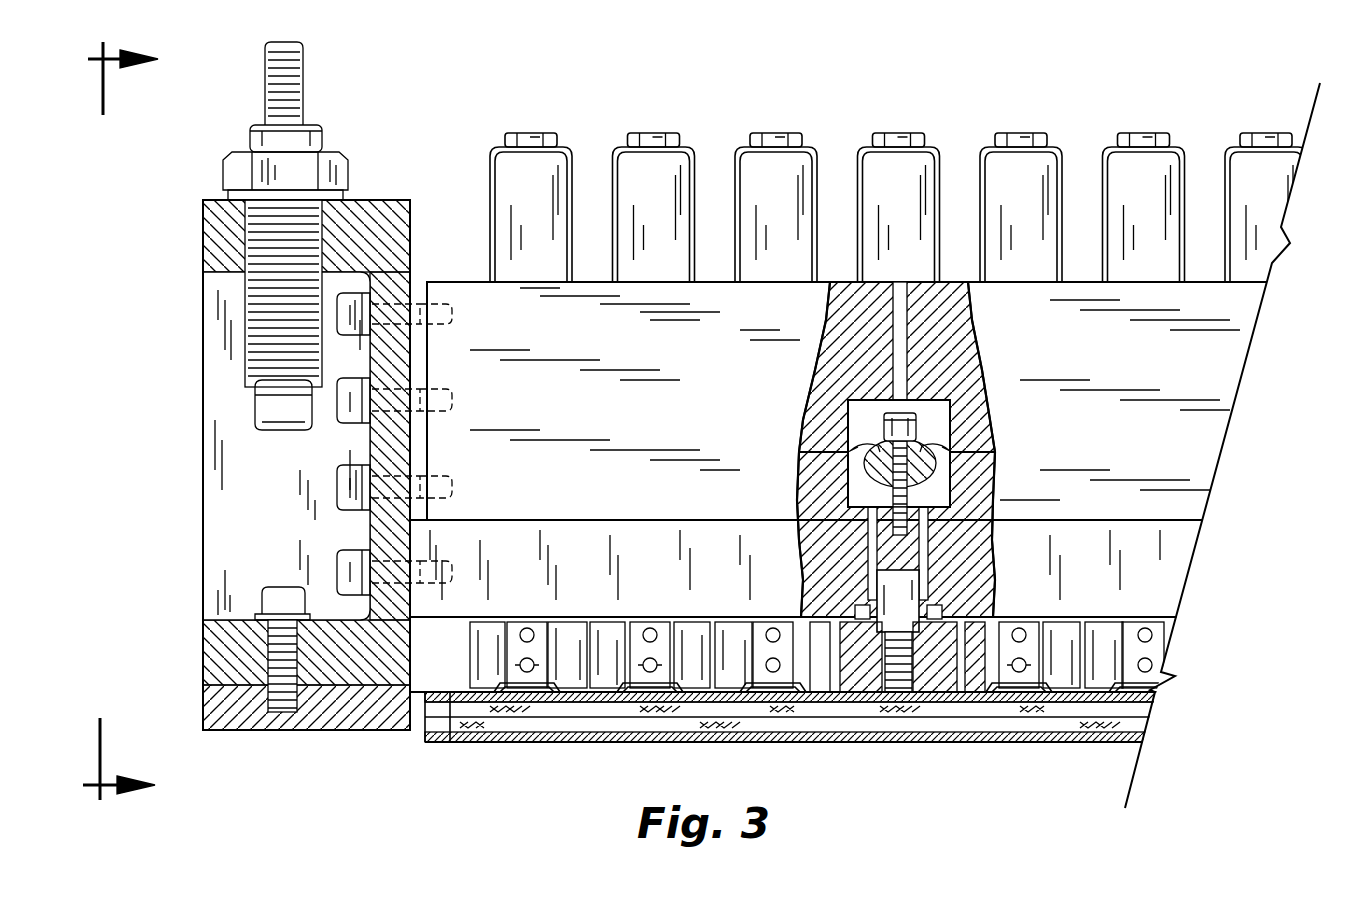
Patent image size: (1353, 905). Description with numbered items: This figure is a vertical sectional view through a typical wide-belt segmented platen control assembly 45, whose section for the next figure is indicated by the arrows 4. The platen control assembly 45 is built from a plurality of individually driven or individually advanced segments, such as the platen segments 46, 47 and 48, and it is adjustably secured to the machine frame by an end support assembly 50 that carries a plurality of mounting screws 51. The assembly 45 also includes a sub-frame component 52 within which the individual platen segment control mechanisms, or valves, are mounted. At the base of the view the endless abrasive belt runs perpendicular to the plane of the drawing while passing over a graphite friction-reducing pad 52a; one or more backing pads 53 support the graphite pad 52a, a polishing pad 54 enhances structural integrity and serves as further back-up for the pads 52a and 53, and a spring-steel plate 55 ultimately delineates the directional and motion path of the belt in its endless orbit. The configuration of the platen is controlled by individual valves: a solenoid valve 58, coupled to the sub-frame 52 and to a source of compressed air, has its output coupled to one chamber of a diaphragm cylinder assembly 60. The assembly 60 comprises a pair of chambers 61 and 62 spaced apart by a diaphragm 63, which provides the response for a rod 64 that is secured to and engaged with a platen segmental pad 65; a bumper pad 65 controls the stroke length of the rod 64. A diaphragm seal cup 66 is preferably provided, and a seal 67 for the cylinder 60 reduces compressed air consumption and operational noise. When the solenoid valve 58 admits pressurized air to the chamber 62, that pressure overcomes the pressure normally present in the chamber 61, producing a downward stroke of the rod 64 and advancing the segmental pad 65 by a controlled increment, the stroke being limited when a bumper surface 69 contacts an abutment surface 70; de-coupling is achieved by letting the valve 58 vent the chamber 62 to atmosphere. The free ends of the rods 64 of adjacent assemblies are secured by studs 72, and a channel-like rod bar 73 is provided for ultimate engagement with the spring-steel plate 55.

The section line 4- 4 is at (100, 422).
The platen control assembly 45 is at (1252, 430).
The platen segment 46 is at (690, 632).
The platen segment 47 is at (740, 632).
The platen segment 48 is at (820, 692).
The end support assembly 50 is at (386, 200).
The mounting screws 51 is at (337, 482).
The sub-frame component 52 is at (460, 282).
The graphite friction-reducing pad 52a is at (960, 735).
The backing pad 53 is at (1062, 730).
The polishing pad 54 is at (748, 705).
The spring-steel plate 55 is at (450, 700).
The solenoid valve 58 is at (912, 147).
The diaphragm cylinder assembly 60 is at (942, 392).
The chamber 61 is at (935, 465).
The chamber 62 is at (952, 410).
The diaphragm 63 is at (850, 445).
The rod 64 is at (922, 578).
The platen segmental pad 65 is at (830, 398).
The diaphragm seal cup 66 is at (942, 453).
The seal 67 is at (935, 605).
The bumper surface 69 is at (852, 462).
The abutment surface 70 is at (842, 515).
The studs 72 is at (648, 628).
The rod bar 73 is at (530, 690).